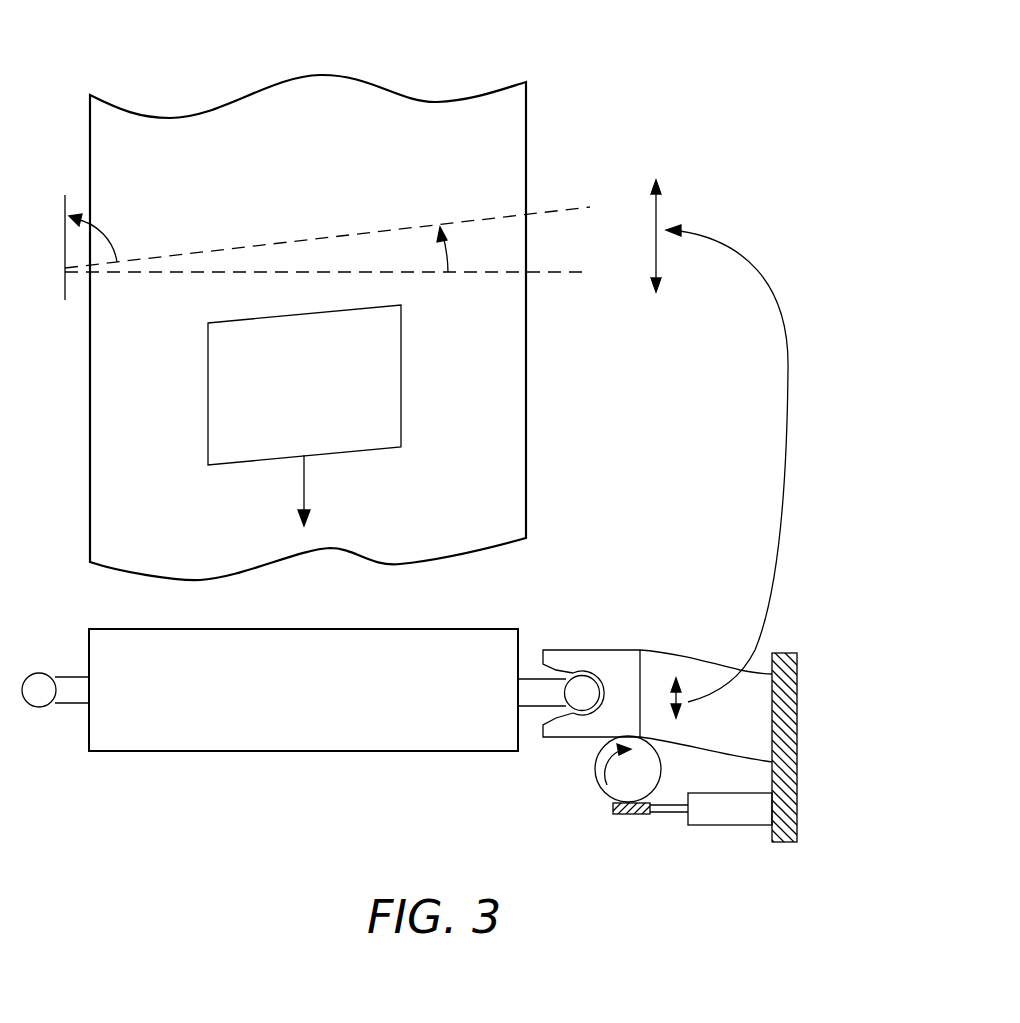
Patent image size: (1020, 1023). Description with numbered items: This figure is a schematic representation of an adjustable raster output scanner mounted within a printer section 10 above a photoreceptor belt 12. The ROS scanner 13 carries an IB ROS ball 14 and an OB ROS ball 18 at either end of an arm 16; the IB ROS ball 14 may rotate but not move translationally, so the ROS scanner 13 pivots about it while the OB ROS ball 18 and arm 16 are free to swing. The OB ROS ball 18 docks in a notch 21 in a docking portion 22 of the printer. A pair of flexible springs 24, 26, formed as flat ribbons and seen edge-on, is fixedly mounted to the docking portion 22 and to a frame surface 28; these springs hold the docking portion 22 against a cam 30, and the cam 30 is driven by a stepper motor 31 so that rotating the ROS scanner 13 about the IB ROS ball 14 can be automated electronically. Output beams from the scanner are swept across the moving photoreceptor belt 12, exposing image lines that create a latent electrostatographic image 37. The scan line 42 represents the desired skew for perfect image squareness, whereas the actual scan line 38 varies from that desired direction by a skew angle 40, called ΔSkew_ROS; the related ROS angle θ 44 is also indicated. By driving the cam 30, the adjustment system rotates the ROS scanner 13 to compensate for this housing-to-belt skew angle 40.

The printer section 10 is at (573, 90).
The photoreceptor belt 12 is at (527, 431).
The ROS scanner 13 is at (293, 754).
The IB ROS ball 14 is at (70, 680).
The arm 16 is at (533, 680).
The OB ROS ball 18 is at (541, 728).
The notch 21 is at (554, 666).
The docking portion 22 is at (617, 660).
The flexible spring 24 is at (672, 650).
The flexible spring 26 is at (690, 744).
The frame surface 28 is at (770, 660).
The cam 30 is at (606, 790).
The stepper motor 31 is at (720, 818).
The latent electrostatographic image 37 is at (402, 390).
The scan line 38 is at (318, 239).
The skew angle 40 is at (447, 247).
The scan line 42 is at (552, 272).
The ROS angle θ 44 is at (97, 225).